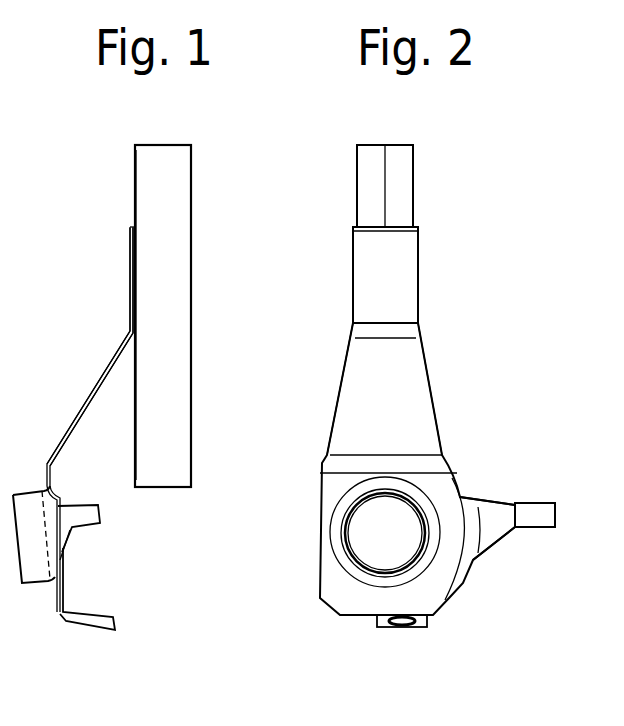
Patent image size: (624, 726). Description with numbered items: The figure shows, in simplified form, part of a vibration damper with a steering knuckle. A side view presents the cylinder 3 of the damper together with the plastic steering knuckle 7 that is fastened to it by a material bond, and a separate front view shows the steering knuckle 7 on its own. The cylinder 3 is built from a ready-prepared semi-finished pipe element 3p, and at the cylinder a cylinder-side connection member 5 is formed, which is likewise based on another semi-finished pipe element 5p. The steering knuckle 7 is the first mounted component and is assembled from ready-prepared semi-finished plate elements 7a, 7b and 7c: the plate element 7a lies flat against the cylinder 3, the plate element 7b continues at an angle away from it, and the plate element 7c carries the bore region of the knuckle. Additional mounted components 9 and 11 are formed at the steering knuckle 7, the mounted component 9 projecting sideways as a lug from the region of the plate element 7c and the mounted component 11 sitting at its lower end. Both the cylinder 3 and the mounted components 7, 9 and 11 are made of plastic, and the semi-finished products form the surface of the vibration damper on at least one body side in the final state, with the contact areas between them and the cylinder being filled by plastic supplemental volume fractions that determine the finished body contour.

In FIG. 1, the cylinder 3 is at (200, 262).
In FIG. 1, the pipe element 3p is at (162, 183).
In FIG. 1, the cylinder-side connection member 5 is at (35, 602).
In FIG. 1, the pipe element 5p is at (28, 507).
In FIG. 1, the steering knuckle 7 is at (65, 378).
In FIG. 2, the steering knuckle 7 is at (442, 356).
In FIG. 1, the plate element 7a is at (130, 250).
In FIG. 2, the plate element 7a is at (378, 273).
In FIG. 1, the plate element 7b is at (103, 378).
In FIG. 2, the plate element 7b is at (367, 377).
In FIG. 2, the plate element 7c is at (343, 584).
In FIG. 2, the mounted component 9 is at (545, 502).
In FIG. 2, the mounted component 11 is at (403, 629).